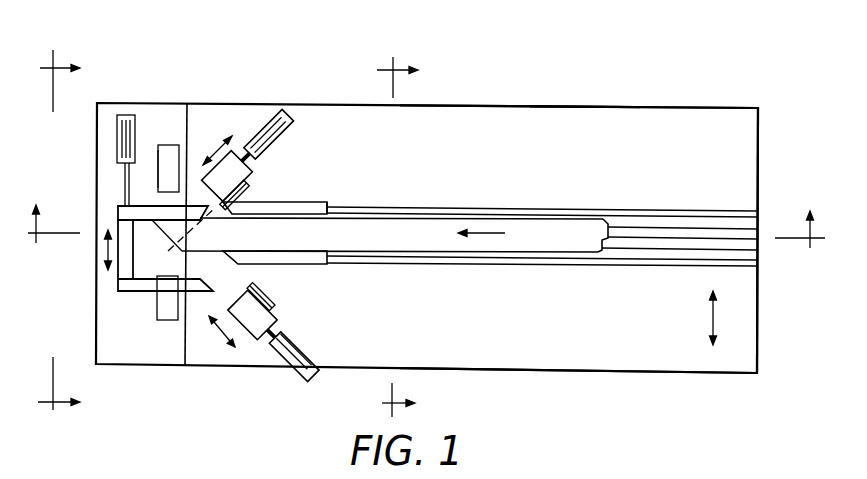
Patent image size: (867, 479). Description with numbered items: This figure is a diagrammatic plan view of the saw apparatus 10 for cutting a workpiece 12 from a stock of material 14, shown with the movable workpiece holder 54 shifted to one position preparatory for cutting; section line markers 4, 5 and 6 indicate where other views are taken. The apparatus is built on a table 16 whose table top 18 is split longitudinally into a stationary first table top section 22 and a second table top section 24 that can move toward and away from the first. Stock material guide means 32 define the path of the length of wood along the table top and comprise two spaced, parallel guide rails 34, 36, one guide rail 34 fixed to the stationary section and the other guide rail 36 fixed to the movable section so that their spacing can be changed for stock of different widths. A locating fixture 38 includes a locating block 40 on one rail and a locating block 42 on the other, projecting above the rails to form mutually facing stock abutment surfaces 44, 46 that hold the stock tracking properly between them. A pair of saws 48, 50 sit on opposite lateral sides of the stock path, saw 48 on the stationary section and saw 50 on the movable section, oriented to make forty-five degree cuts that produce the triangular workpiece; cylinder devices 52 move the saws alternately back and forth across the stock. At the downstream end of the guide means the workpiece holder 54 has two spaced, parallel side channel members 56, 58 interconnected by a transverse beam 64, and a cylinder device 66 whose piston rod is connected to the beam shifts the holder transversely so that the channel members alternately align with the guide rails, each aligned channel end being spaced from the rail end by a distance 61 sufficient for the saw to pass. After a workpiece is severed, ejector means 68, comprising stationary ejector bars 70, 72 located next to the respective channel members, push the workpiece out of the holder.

The saw apparatus 10 is at (538, 82).
The workpiece 12 is at (180, 242).
The stock of material 14 is at (532, 233).
The table 16 is at (635, 90).
The table top 18 is at (690, 140).
The first table top section 22 is at (580, 133).
The second table top section 24 is at (607, 352).
The stock material guide means 32 is at (549, 170).
The guide rail 34 is at (668, 211).
The guide rail 36 is at (668, 262).
The locating fixture 38 is at (336, 196).
The locating block 40 is at (332, 201).
The locating block 42 is at (318, 264).
The stock abutment surface 44 is at (289, 222).
The stock abutment surface 46 is at (262, 246).
The saw 48 is at (236, 157).
The saw 50 is at (249, 338).
The cylinder device 52 is at (290, 123).
The movable workpiece holder 54 is at (112, 299).
The side channel member 56 is at (153, 206).
The side channel member 58 is at (140, 291).
The distance 61 is at (254, 188).
The transverse beam 64 is at (118, 271).
The cylinder device 66 is at (117, 128).
The ejector means 68 is at (169, 115).
The ejector bar 70 is at (179, 158).
The ejector bar 72 is at (174, 308).
The section line 4- 4 is at (57, 234).
The section line 5- 5 is at (423, 236).
The section line 6- 6 is at (396, 236).